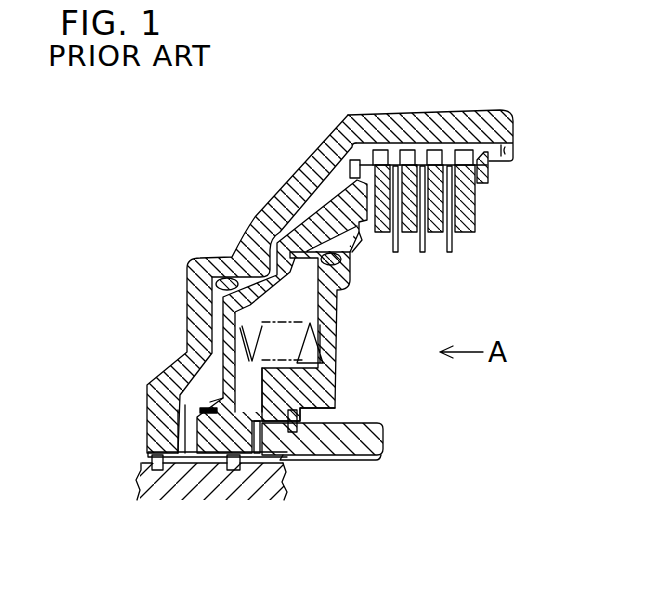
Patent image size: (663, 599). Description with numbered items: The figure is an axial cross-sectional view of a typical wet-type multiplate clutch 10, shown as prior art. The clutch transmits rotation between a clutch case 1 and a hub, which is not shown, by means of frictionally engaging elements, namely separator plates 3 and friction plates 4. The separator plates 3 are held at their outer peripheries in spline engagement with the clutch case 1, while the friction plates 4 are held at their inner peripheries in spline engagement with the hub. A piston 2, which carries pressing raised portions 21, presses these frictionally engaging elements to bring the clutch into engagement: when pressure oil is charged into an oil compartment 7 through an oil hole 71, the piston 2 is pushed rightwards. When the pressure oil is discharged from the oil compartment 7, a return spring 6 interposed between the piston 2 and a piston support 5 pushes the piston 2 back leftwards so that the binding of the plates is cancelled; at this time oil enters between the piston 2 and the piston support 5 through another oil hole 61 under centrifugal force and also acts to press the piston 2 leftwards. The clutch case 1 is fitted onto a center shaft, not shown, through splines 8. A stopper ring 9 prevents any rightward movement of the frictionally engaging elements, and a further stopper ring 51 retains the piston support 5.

The clutch case 1 is at (433, 118).
The multiplate clutch 10 is at (214, 139).
The stopper ring 9 is at (489, 172).
The separator plates 3 is at (476, 218).
The friction plates 4 is at (452, 253).
The piston 2 is at (345, 234).
The pressing raised portions 21 is at (366, 228).
The return spring 6 is at (318, 341).
The piston support 5 is at (330, 401).
The stopper ring 51 is at (298, 415).
The splines 8 is at (328, 460).
The oil compartment 7 is at (185, 408).
The oil hole 71 is at (190, 446).
The oil hole 61 is at (259, 454).